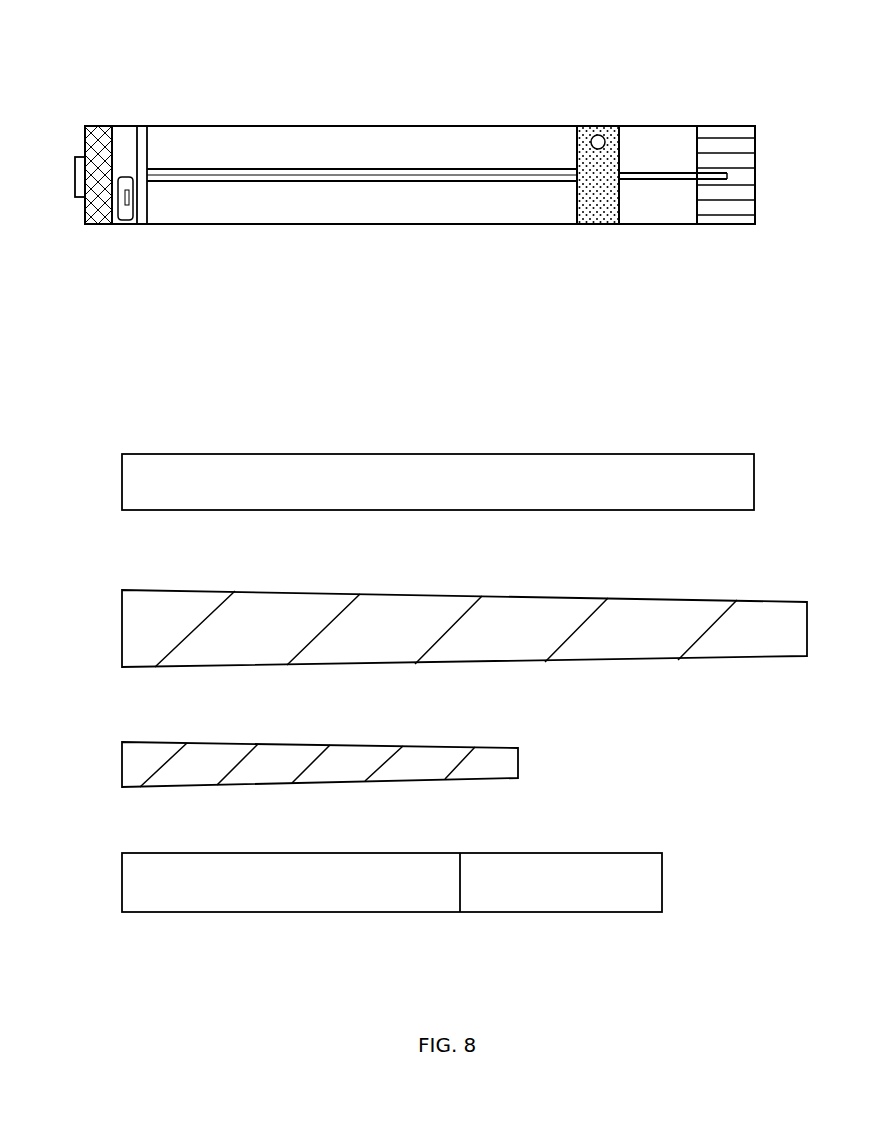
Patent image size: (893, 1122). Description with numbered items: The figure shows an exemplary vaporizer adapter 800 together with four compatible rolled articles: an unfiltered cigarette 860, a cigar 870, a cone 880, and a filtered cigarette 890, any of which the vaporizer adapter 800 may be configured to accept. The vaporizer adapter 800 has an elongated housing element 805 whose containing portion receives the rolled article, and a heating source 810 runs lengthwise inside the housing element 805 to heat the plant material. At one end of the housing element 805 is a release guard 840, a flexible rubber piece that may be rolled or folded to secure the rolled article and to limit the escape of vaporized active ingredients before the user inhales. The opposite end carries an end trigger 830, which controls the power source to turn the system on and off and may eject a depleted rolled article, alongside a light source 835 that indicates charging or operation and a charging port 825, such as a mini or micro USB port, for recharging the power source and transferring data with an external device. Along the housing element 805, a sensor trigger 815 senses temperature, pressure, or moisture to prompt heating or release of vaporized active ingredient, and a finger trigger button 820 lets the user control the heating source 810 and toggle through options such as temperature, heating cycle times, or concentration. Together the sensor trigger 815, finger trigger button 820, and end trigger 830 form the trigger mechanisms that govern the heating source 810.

The vaporizer adapter 800 is at (104, 35).
The housing element 805 is at (375, 125).
The heating source 810 is at (240, 170).
The sensor trigger 815 is at (600, 225).
The finger trigger button 820 is at (598, 135).
The charging port 825 is at (125, 222).
The end trigger 830 is at (72, 182).
The light source 835 is at (100, 222).
The release guard 840 is at (732, 225).
The unfiltered cigarette 860 is at (98, 413).
The cigar 870 is at (95, 588).
The cone 880 is at (91, 751).
The filtered cigarette 890 is at (91, 851).